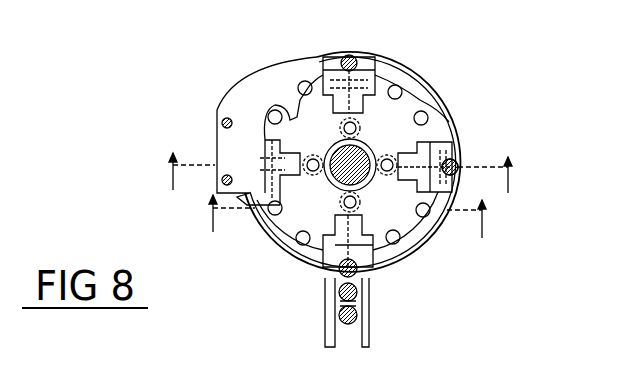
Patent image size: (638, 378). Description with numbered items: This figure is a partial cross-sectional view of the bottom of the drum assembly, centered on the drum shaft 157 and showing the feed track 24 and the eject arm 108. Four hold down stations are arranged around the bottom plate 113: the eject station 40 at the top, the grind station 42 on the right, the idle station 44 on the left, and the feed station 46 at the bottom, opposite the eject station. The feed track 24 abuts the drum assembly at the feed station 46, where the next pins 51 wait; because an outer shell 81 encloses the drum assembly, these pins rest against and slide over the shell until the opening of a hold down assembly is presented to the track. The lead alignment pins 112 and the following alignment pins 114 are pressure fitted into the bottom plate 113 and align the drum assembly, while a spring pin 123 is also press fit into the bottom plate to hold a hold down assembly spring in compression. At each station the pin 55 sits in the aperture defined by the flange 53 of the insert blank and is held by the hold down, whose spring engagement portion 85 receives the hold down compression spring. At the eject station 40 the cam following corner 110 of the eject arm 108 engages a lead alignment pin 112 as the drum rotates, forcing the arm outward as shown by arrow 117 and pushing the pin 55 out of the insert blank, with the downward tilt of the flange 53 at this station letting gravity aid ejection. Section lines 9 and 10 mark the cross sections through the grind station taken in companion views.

The arrow 117 is at (290, 68).
The eject arm 108 is at (315, 65).
The pin 55 is at (349, 55).
The eject station 40 is at (372, 50).
The drum shaft 157 is at (393, 73).
The lead alignment pins 112 is at (272, 110).
The bottom plate 113 is at (428, 98).
The outer shell 81 is at (449, 122).
The grind station 42 is at (478, 138).
The flange 53 is at (456, 165).
The section line 9- 9 is at (338, 174).
The section line 10- 10 is at (347, 216).
The cam following corner 110 is at (217, 90).
The idle station 44 is at (240, 199).
The following alignment pins 114 is at (398, 243).
The spring pin 123 is at (357, 204).
The spring engagement portion 85 is at (317, 262).
The next pin 51 is at (327, 322).
The feed station 46 is at (378, 280).
The feed track 24 is at (362, 330).